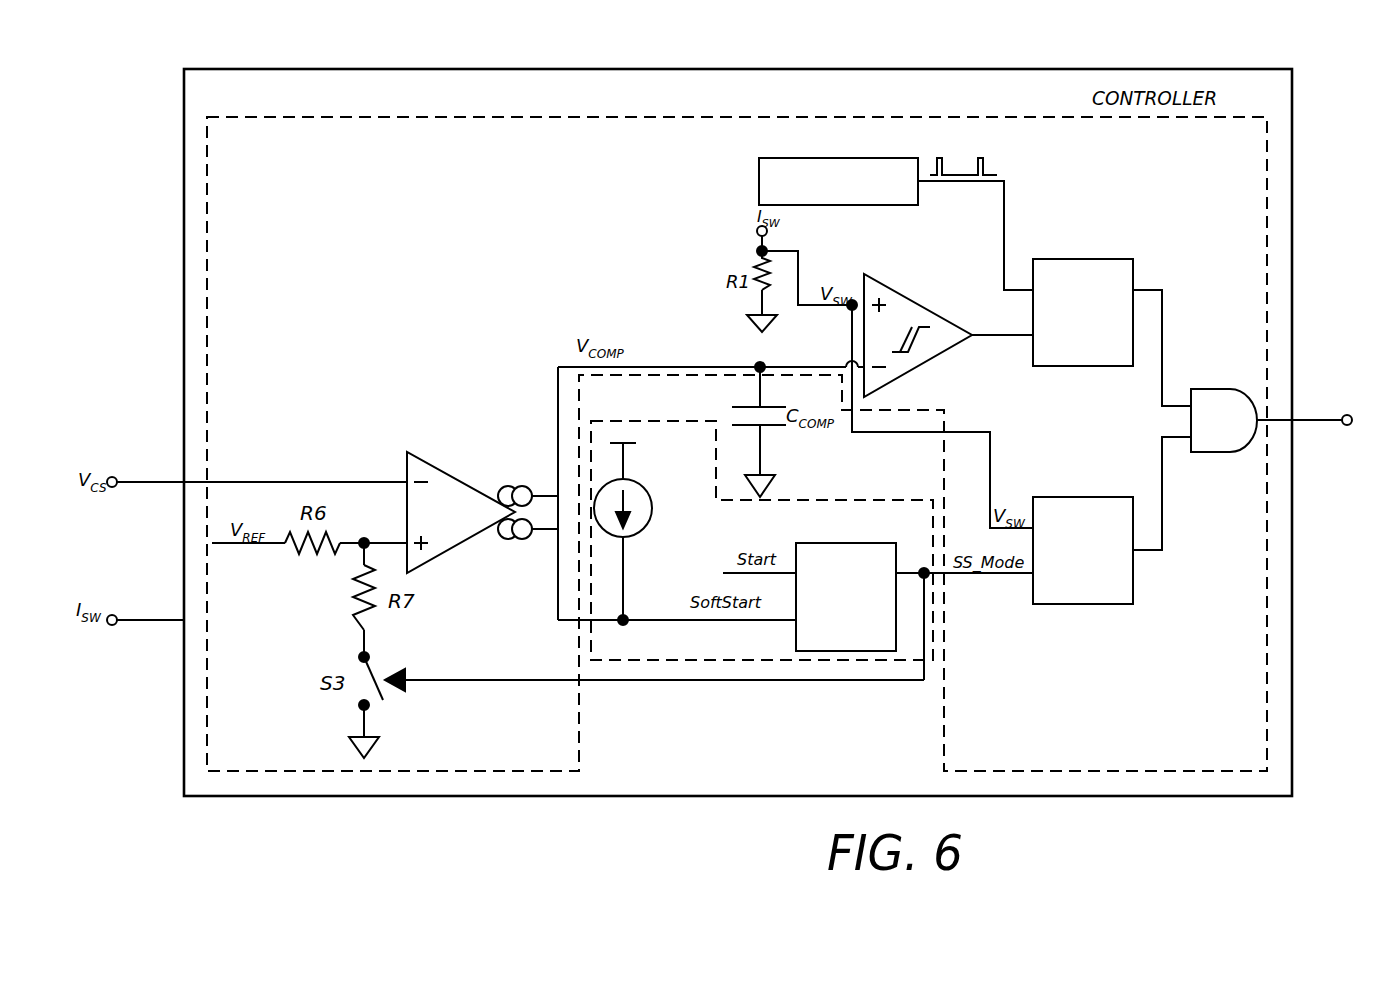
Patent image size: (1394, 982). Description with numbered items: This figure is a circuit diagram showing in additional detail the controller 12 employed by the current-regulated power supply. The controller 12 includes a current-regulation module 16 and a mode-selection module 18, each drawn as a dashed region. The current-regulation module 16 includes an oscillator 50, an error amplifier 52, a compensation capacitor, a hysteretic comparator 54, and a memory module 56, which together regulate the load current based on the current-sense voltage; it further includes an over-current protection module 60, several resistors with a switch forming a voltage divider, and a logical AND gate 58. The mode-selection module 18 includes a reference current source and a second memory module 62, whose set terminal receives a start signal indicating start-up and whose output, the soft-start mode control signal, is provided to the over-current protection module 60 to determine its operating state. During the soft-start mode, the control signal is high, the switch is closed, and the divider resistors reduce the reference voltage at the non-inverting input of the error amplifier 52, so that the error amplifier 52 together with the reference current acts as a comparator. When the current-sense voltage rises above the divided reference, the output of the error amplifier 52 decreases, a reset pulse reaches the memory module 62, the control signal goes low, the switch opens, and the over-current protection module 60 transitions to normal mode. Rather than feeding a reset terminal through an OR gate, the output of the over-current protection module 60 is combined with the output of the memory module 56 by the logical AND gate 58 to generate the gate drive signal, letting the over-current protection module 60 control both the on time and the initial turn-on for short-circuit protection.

The controller 12 is at (184, 137).
The current-regulation module 16 is at (335, 117).
The mode-selection module 18 is at (634, 421).
The oscillator 50 is at (758, 195).
The error amplifier 52 is at (440, 470).
The hysteretic comparator 54 is at (902, 294).
The memory module 56 is at (1060, 259).
The logical AND gate 58 is at (1197, 389).
The over-current protection module 60 is at (1043, 497).
The memory module 62 is at (826, 543).